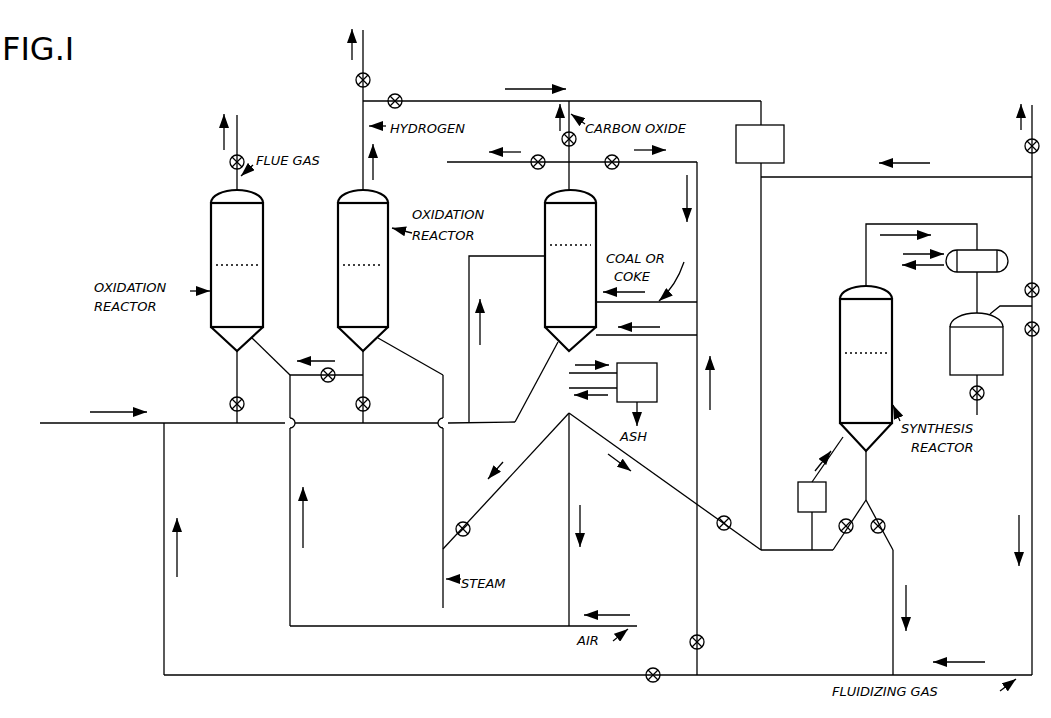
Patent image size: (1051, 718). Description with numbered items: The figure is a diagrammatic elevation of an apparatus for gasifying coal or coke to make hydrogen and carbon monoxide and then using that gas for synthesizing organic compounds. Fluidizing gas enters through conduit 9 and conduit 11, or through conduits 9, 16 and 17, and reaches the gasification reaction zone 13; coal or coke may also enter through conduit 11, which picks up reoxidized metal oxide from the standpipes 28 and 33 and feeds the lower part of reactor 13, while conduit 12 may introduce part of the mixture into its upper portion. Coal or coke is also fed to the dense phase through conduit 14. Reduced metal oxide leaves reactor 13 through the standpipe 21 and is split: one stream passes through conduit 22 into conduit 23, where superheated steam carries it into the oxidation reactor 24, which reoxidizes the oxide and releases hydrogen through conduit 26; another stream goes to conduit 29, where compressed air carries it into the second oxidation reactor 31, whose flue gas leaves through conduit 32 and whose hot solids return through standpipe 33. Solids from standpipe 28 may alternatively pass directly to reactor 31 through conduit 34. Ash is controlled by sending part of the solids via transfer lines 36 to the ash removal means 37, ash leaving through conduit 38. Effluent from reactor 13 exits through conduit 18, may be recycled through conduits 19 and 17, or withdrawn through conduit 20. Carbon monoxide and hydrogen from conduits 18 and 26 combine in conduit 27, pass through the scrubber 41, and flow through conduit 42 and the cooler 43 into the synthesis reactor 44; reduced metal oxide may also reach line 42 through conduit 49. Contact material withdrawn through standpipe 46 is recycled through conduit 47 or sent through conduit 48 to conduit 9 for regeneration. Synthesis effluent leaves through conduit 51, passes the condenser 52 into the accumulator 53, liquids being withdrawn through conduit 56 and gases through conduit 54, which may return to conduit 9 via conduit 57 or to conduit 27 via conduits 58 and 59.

The conduit 9 is at (821, 678).
The conduit 11 is at (333, 428).
The conduit 12 is at (469, 274).
The coal gasification zone 13 is at (545, 293).
The conduit 14 is at (640, 306).
The conduit 16 is at (697, 584).
The conduit 17 is at (686, 324).
The conduit 18 is at (569, 172).
The conduit 19 is at (700, 233).
The conduit 20 is at (449, 165).
The conduit or standpipe 21 is at (567, 492).
The conduit 22 is at (538, 450).
The conduit 23 is at (443, 485).
The oxidation zone 24 is at (378, 293).
The conduit 26 is at (362, 117).
The conduit 27 is at (693, 106).
The standpipe 28 is at (364, 364).
The conduit 29 is at (265, 347).
The second oxidation zone 31 is at (258, 292).
The conduit 32 is at (237, 184).
The conduit or standpipe 33 is at (237, 373).
The conduit 34 is at (302, 378).
The transfer lines 36 is at (594, 388).
The ash removal means 37 is at (640, 372).
The conduit 38 is at (648, 405).
The scrubber 41 is at (784, 146).
The conduit 42 is at (812, 533).
The cooler 43 is at (798, 494).
The synthesis reactor 44 is at (852, 339).
The standpipe 46 is at (867, 471).
The conduit 47 is at (840, 546).
The conduit 48 is at (893, 560).
The conduit 49 is at (665, 487).
The conduit 51 is at (905, 202).
The condenser 52 is at (987, 250).
The accumulator 53 is at (955, 346).
The conduit 54 is at (1012, 292).
The conduit 56 is at (968, 383).
The conduit 57 is at (1032, 486).
The conduit 58 is at (1032, 196).
The conduit 59 is at (937, 178).